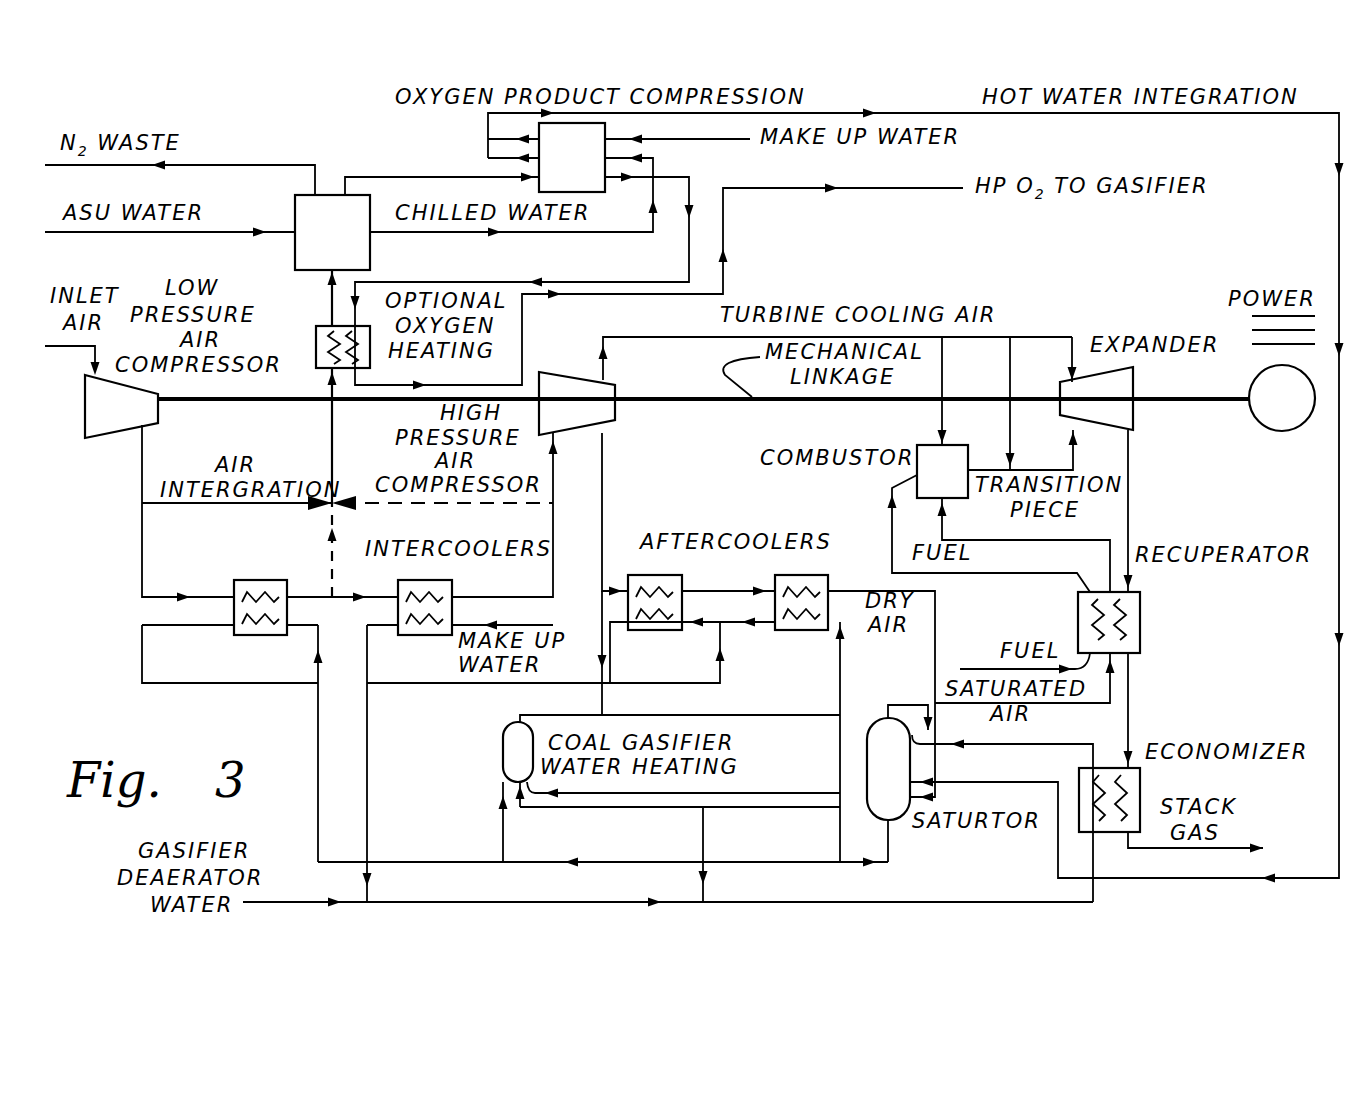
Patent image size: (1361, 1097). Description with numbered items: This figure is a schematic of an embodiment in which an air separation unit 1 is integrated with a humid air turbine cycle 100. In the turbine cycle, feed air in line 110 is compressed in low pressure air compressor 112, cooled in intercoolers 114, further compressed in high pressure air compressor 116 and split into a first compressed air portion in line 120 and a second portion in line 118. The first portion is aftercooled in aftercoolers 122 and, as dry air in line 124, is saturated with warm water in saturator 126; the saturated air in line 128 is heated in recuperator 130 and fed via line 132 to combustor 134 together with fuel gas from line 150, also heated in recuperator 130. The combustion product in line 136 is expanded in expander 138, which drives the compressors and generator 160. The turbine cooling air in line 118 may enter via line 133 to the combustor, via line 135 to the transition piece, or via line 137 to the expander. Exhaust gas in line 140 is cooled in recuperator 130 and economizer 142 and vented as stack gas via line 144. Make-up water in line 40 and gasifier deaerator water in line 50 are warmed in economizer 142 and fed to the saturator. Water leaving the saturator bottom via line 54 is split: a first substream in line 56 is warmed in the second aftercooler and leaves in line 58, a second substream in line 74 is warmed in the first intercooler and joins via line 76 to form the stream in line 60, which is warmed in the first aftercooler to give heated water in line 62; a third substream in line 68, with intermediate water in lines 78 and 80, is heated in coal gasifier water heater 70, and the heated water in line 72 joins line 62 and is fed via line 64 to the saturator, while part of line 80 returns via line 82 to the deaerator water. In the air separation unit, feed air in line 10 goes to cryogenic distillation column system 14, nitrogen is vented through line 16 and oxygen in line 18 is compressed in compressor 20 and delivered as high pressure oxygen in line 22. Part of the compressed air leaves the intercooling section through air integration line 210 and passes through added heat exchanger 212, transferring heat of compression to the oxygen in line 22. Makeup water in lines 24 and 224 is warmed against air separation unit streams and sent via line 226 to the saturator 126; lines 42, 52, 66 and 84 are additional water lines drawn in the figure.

The air separation unit 1 is at (172, 250).
The feed air line 10 is at (327, 315).
The cryogenic distillation column system 14 is at (346, 257).
The nitrogen product line 16 is at (293, 163).
The oxygen product line 18 is at (390, 176).
The oxygen compressor 20 is at (586, 168).
The compressed oxygen stream line 22 is at (880, 189).
The cooling water line 24 is at (242, 230).
The make-up water line 40 is at (507, 623).
The water line 42 is at (367, 772).
The gasifier deaerator water line 50 is at (305, 903).
The water line to saturator 52 is at (1018, 748).
The saturator bottom water line 54 is at (892, 834).
The first substream line 56 is at (840, 828).
The warmed water line from second aftercooler 58 is at (768, 628).
The combined warmed water line 60 is at (708, 628).
The heated water line 62 is at (604, 693).
The saturator feed water line 64 is at (773, 715).
The water return line 66 is at (806, 858).
The third substream line 68 is at (503, 840).
The coal gasifier water heater 70 is at (530, 765).
The heated water line from heater 72 is at (575, 712).
The second substream line 74 is at (410, 863).
The warmed water line from intercooler 76 is at (718, 688).
The intermediate water stream line 78 is at (777, 790).
The lower intermediate water stream line 80 is at (758, 808).
The water combining line 82 is at (702, 825).
The tank outlet line 84 is at (545, 808).
The integrated humid air turbine cycle 100 is at (258, 716).
The feed air line 110 is at (72, 347).
The low pressure air compressor 112 is at (128, 416).
The intercoolers 114 is at (262, 636).
The high pressure air compressor 116 is at (592, 413).
The second compressed air portion line 118 is at (605, 370).
The first compressed air portion line 120 is at (602, 462).
The aftercoolers 122 is at (728, 612).
The dry air line 124 is at (938, 648).
The saturator 126 is at (905, 769).
The saturated air line 128 is at (1040, 704).
The recuperator 130 is at (1140, 643).
The heated saturated air line 132 is at (993, 541).
The turbine cooling air line to combustor 133 is at (970, 372).
The combustor 134 is at (960, 480).
The turbine cooling air line to transition piece 135 is at (1036, 372).
The combustion product line 136 is at (1070, 452).
The turbine cooling air line to expander 137 is at (1075, 345).
The expander 138 is at (1114, 408).
The exhaust gas line 140 is at (1130, 507).
The economizer 142 is at (1140, 802).
The stack gas line 144 is at (1147, 852).
The fuel gas line 150 is at (982, 668).
The generator 160 is at (1300, 410).
The air integration line 210 is at (198, 508).
The heat exchanger 212 is at (283, 340).
The demineralized makeup water line 224 is at (677, 140).
The warmed makeup water line 226 is at (488, 125).